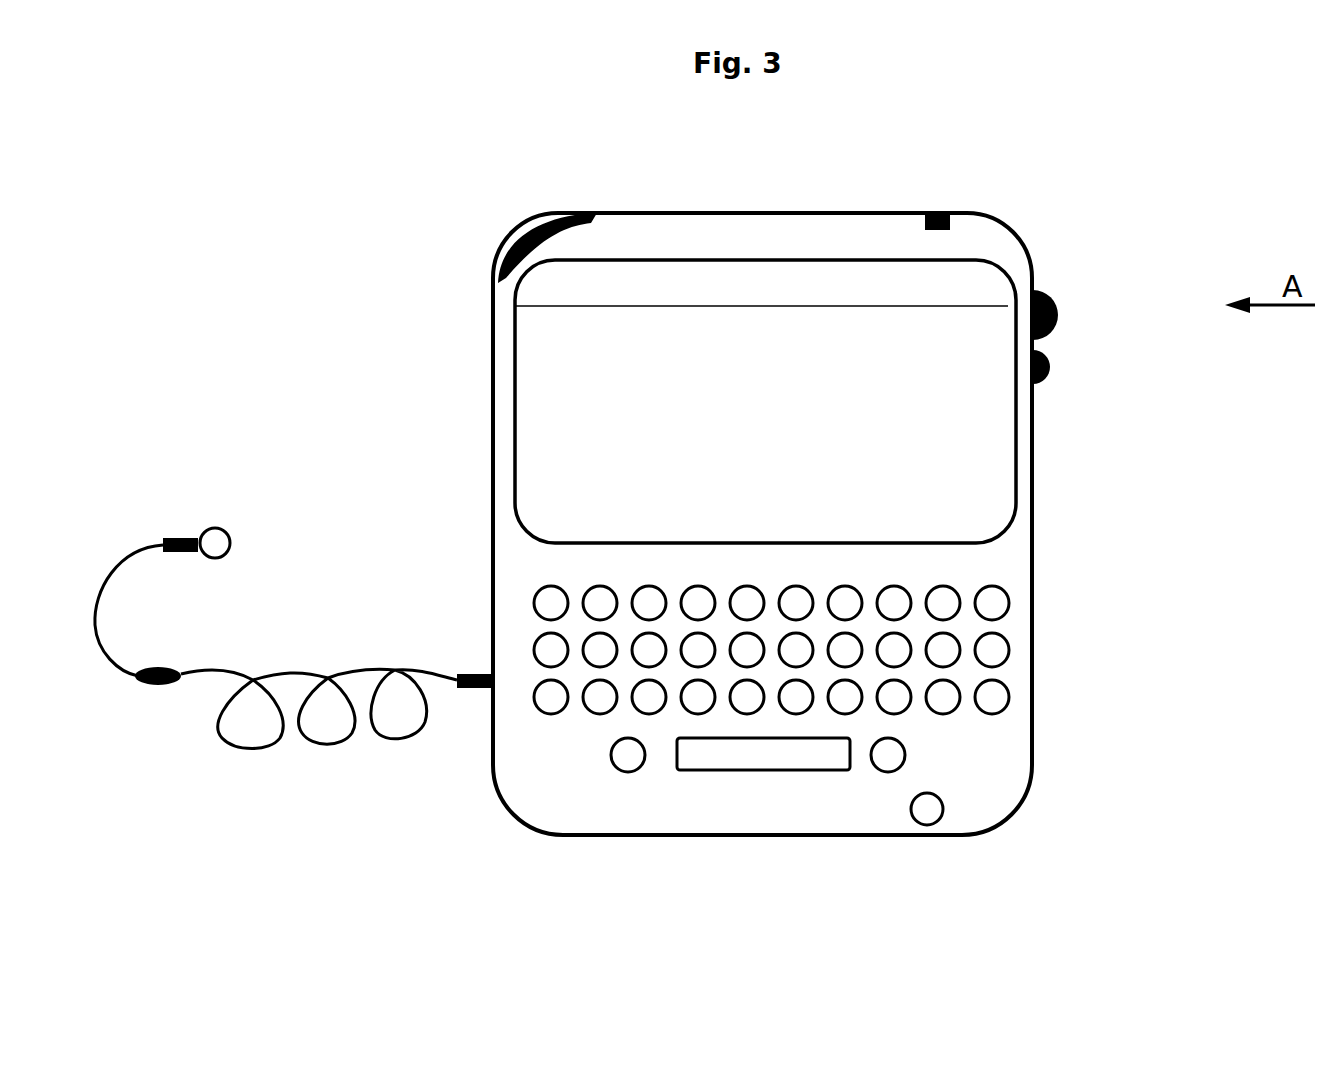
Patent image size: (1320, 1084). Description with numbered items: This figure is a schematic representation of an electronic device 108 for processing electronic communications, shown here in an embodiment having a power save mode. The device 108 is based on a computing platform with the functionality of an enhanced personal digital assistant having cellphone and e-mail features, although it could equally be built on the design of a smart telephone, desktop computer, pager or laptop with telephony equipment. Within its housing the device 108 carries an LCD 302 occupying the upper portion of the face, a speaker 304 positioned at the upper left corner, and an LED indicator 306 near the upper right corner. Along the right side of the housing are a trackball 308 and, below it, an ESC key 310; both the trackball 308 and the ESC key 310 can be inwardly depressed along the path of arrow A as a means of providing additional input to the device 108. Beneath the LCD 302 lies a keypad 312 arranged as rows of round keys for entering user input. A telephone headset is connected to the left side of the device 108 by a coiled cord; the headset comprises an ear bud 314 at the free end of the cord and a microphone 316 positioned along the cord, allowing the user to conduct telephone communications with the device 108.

The electronic device 108 is at (733, 853).
The LCD 302 is at (524, 526).
The speaker 304 is at (516, 238).
The LED indicator 306 is at (952, 222).
The trackball 308 is at (1059, 317).
The ESC key 310 is at (1051, 368).
The keypad 312 is at (1012, 652).
The ear bud 314 is at (242, 542).
The microphone 316 is at (185, 670).